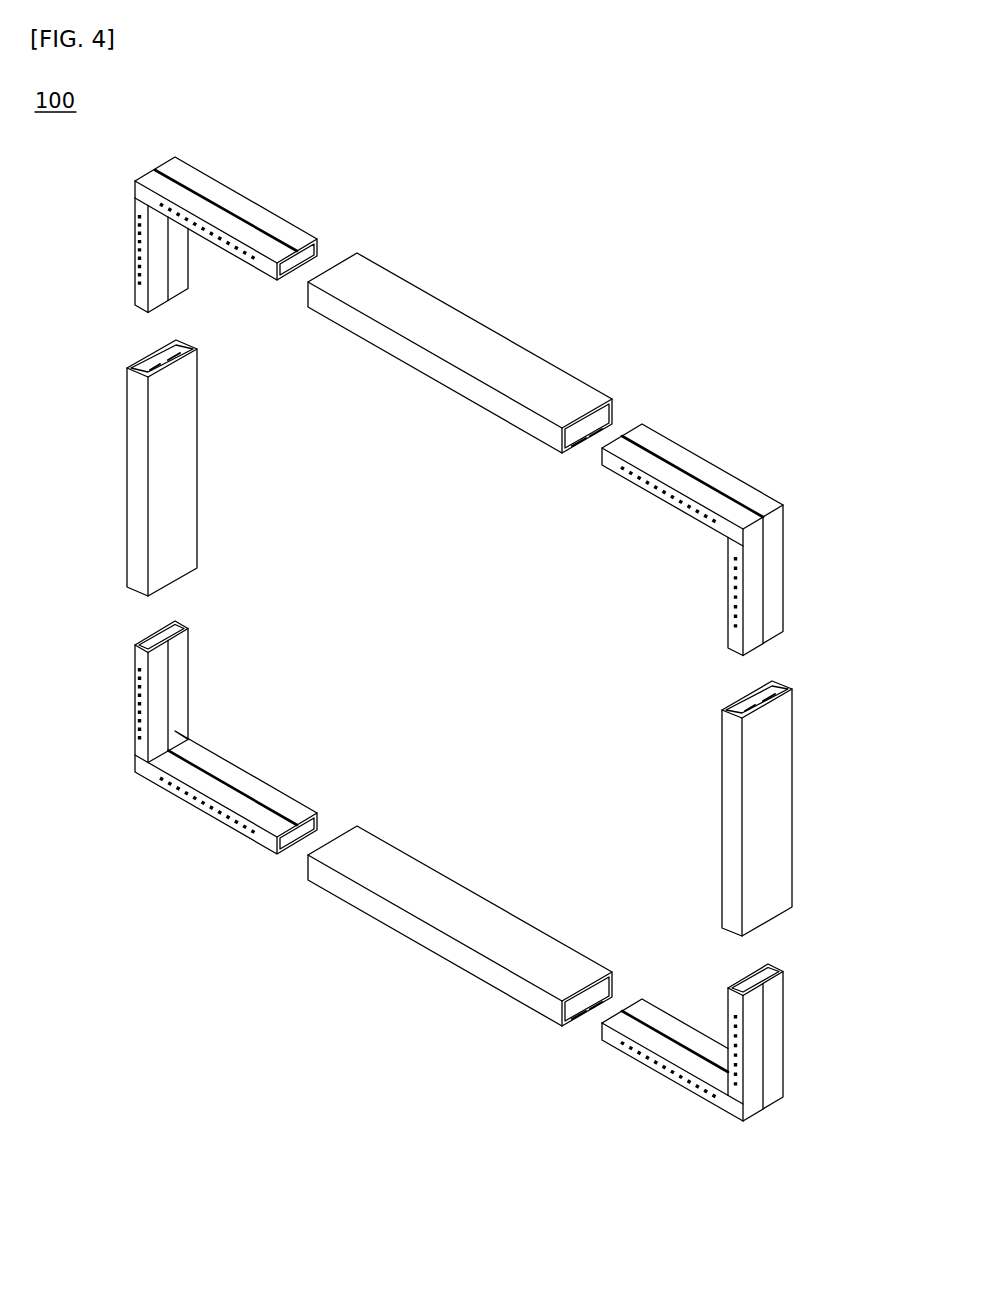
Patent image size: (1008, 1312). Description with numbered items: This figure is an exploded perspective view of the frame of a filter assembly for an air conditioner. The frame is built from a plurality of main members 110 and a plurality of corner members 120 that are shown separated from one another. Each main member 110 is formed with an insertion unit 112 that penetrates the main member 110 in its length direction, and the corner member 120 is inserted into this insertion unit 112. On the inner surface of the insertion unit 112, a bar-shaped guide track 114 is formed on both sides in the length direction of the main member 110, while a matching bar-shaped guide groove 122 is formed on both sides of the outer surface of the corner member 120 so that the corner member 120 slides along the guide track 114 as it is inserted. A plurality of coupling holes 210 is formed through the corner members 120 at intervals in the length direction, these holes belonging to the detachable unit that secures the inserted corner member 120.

The main member 110 is at (493, 281).
The insertion unit 112 is at (590, 410).
The guide track 114 is at (158, 362).
The corner member 120 is at (211, 152).
The guide groove 122 is at (283, 238).
The coupling hole 210 is at (227, 232).